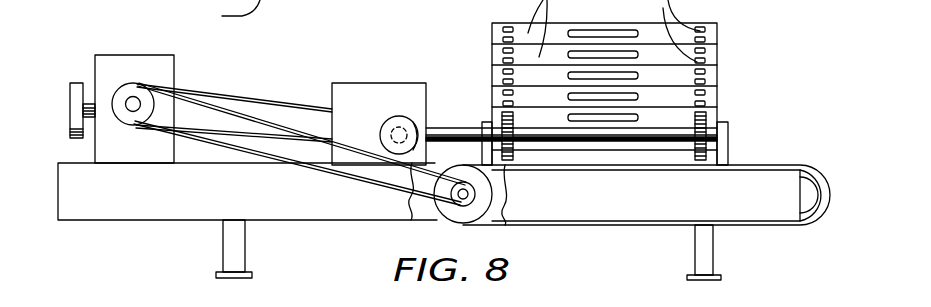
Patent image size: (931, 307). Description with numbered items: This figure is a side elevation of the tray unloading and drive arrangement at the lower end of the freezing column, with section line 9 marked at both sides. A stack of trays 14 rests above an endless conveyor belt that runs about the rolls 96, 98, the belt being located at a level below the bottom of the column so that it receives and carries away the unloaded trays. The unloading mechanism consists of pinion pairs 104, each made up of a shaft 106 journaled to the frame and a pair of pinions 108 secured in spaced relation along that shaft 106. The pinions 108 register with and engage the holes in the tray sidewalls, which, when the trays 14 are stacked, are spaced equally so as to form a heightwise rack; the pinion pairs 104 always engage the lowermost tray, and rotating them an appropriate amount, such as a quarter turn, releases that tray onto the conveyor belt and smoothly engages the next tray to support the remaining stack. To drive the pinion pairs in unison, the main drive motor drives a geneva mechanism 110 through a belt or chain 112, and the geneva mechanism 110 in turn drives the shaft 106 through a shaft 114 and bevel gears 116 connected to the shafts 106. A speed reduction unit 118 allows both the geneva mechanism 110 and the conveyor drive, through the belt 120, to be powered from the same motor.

The section line 9- 9 is at (61, 13).
The trays 14 is at (722, 97).
The roll 96 is at (473, 210).
The roll 98 is at (818, 180).
The pinion pair 104 is at (556, 136).
The shaft 106 is at (663, 139).
The pinions 108 is at (507, 158).
The geneva mechanism 110 is at (378, 100).
The belt or chain 112 is at (270, 100).
The shaft 114 is at (388, 130).
The bevel gears 116 is at (415, 122).
The speed reduction unit 118 is at (158, 77).
The belt 120 is at (348, 181).